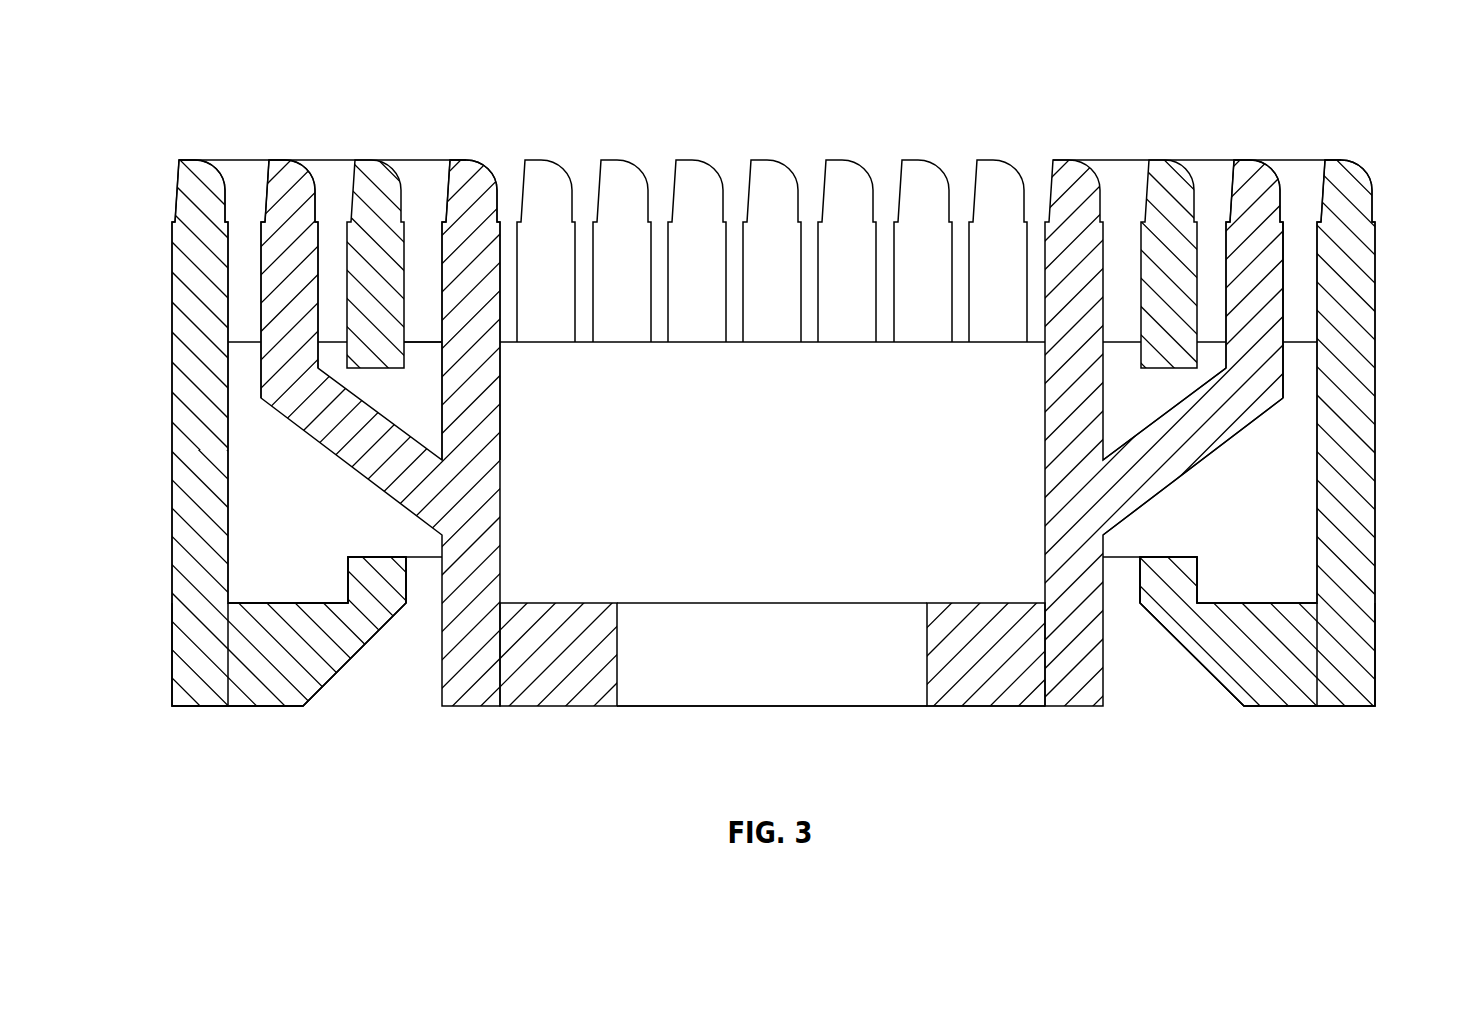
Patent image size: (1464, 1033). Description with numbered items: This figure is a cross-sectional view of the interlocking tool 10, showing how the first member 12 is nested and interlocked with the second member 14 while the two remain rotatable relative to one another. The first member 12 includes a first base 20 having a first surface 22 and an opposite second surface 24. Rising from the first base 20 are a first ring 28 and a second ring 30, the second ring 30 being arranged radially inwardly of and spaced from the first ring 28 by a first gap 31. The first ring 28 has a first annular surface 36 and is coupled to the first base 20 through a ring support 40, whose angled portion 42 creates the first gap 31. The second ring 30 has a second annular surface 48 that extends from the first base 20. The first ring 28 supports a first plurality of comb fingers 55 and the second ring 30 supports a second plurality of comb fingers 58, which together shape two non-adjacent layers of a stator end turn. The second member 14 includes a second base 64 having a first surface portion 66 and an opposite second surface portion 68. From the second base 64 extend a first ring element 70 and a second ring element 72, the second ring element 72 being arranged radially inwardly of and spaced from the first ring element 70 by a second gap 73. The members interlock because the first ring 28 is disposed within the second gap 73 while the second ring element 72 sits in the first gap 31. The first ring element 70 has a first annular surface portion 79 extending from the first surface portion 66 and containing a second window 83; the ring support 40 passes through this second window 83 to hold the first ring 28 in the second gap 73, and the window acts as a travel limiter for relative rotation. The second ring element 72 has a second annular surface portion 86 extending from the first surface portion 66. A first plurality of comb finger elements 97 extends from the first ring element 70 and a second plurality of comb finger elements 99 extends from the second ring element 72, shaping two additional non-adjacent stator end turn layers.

The interlocking tool 10 is at (176, 92).
The first member 12 is at (1095, 762).
The second member 14 is at (158, 463).
The first base 20 is at (597, 635).
The first surface 22 is at (930, 603).
The second surface 24 is at (975, 707).
The first ring 28 is at (1293, 343).
The second ring 30 is at (503, 462).
The first gap 31 is at (414, 176).
The first annular surface 36 is at (1283, 262).
The ring support 40 is at (1223, 445).
The angled portion 42 is at (1165, 412).
The second annular surface 48 is at (1043, 485).
The first plurality of comb fingers 55 is at (1251, 175).
The second plurality of comb fingers 58 is at (467, 176).
The second base 64 is at (252, 662).
The first surface portion 66 is at (285, 602).
The second surface portion 68 is at (263, 707).
The first ring element 70 is at (173, 197).
The second ring element 72 is at (1148, 173).
The second gap 73 is at (242, 173).
The first annular surface portion 79 is at (1378, 620).
The second window 83 is at (381, 557).
The second annular surface portion 86 is at (1200, 577).
The first plurality of comb finger elements 97 is at (1348, 162).
The second plurality of comb finger elements 99 is at (383, 172).